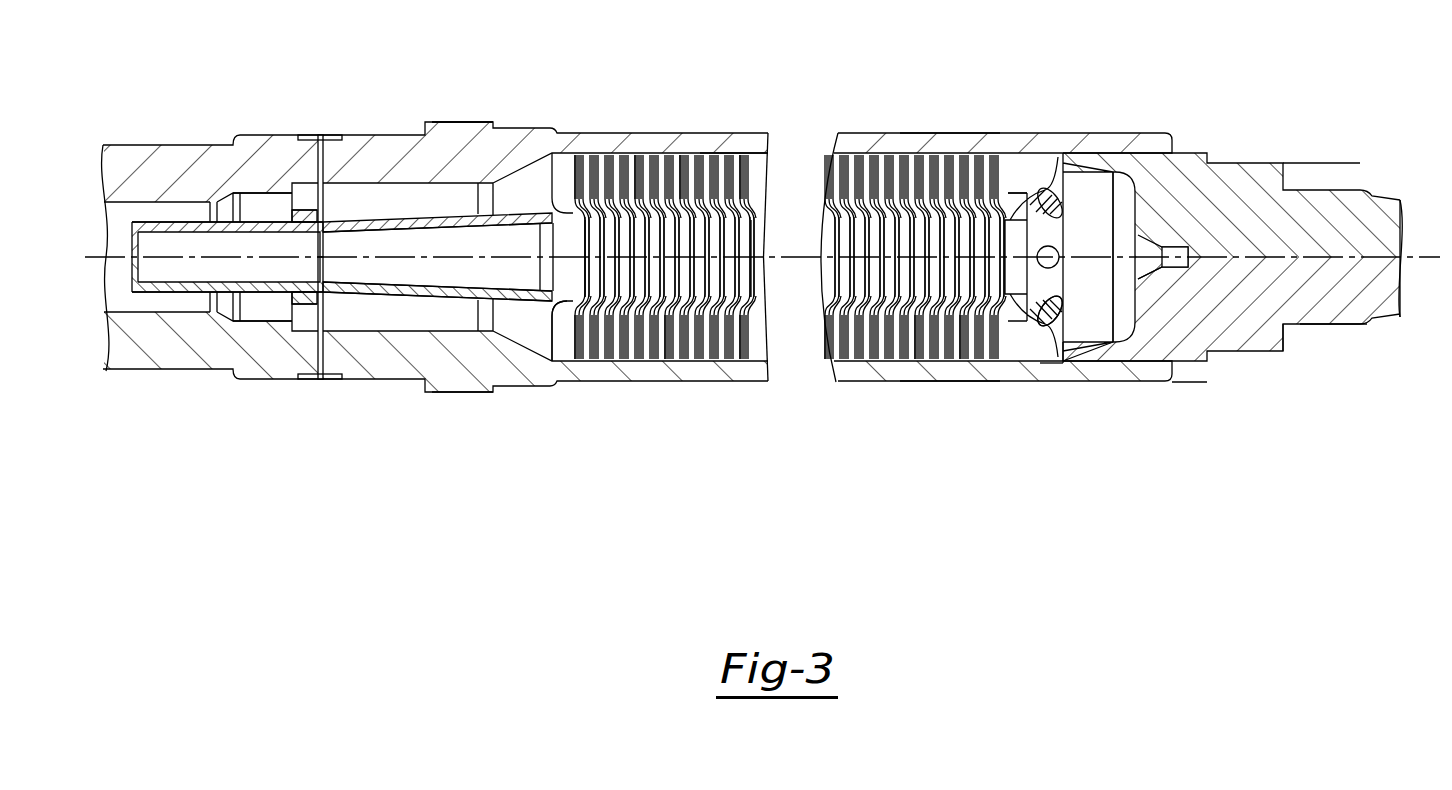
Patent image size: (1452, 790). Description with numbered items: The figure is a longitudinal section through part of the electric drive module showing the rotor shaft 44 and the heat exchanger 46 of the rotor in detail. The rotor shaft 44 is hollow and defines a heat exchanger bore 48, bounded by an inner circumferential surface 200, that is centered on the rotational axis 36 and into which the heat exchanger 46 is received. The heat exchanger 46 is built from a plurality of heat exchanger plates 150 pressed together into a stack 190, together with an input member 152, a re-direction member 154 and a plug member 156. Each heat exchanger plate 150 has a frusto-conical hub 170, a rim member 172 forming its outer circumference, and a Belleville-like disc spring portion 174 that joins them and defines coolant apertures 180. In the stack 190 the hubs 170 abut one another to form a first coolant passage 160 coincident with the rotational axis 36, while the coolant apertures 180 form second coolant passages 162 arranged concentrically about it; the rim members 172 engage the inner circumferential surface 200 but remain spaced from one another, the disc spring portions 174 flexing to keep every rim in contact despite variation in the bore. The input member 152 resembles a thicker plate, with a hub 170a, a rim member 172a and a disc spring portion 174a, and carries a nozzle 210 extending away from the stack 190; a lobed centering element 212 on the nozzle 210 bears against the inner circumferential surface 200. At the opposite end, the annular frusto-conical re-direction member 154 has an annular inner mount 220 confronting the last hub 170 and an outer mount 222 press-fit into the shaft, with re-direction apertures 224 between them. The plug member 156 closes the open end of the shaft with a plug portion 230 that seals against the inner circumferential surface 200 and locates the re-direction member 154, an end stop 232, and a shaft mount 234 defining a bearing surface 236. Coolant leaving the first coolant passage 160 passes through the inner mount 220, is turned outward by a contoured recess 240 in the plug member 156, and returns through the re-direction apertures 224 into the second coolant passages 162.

The rotational axis 36 is at (1422, 248).
The rotor shaft 44 is at (610, 378).
The heat exchanger 46 is at (830, 328).
The heat exchanger bore 48 is at (532, 183).
The heat exchanger plates 150 is at (691, 352).
The input member 152 is at (356, 291).
The re-direction member 154 is at (1053, 357).
The plug member 156 is at (1318, 160).
The first coolant passage 160 is at (618, 262).
The second coolant passages 162 is at (752, 172).
The hub 170 is at (637, 237).
The hub 170a is at (548, 312).
The rim member 172 is at (614, 158).
The rim member 172a is at (566, 372).
The disc spring portion 174 is at (947, 347).
The disc spring portion 174a is at (565, 328).
The coolant apertures 180 is at (708, 158).
The stack 190 is at (1017, 167).
The inner circumferential surface 200 is at (900, 350).
The nozzle 210 is at (341, 212).
The centering element 212 is at (306, 208).
The annular inner mount 220 is at (1022, 310).
The outer mount 222 is at (1063, 365).
The re-direction apertures 224 is at (1063, 213).
The plug portion 230 is at (1110, 355).
The end stop 232 is at (1190, 385).
The shaft mount 234 is at (1338, 300).
The bearing surface 236 is at (1312, 335).
The contoured recess 240 is at (1125, 305).